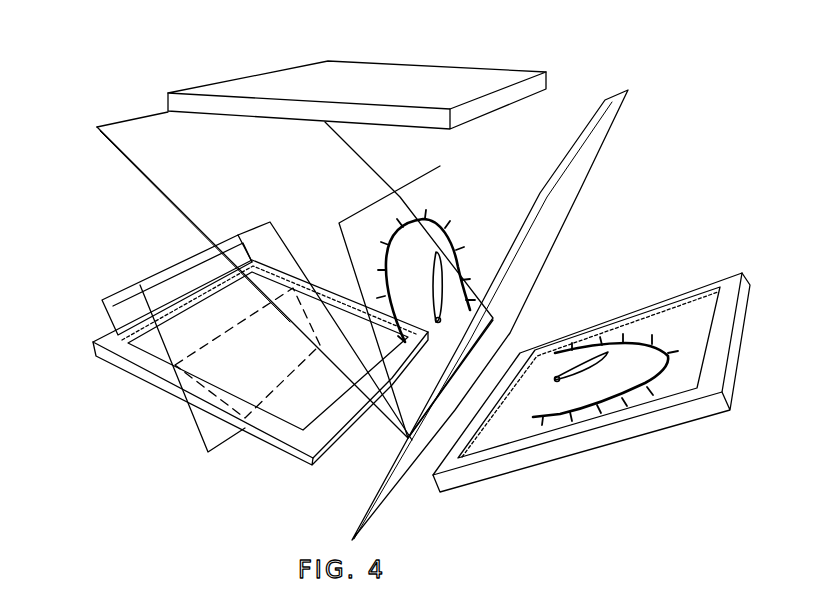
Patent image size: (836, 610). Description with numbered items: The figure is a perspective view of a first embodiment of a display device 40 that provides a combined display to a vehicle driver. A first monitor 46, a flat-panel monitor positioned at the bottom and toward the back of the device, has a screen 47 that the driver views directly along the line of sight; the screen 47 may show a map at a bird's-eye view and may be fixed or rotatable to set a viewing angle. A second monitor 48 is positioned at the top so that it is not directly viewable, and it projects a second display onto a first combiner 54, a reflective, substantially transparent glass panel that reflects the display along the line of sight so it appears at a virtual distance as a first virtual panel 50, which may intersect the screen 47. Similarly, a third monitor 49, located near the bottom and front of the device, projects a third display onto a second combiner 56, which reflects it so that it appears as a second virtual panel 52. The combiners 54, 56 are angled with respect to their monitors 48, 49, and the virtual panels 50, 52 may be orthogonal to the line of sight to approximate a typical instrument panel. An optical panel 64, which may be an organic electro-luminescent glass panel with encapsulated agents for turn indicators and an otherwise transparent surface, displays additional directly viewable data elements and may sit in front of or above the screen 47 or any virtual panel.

The display device 40 is at (94, 48).
The first monitor 46 is at (260, 388).
The screen 47 is at (352, 353).
The second monitor 48 is at (444, 62).
The third monitor 49 is at (702, 285).
The first virtual panel 50 is at (195, 422).
The second virtual panel 52 is at (460, 218).
The first combiner 54 is at (128, 163).
The second combiner 56 is at (612, 92).
The optical panel 64 is at (118, 292).